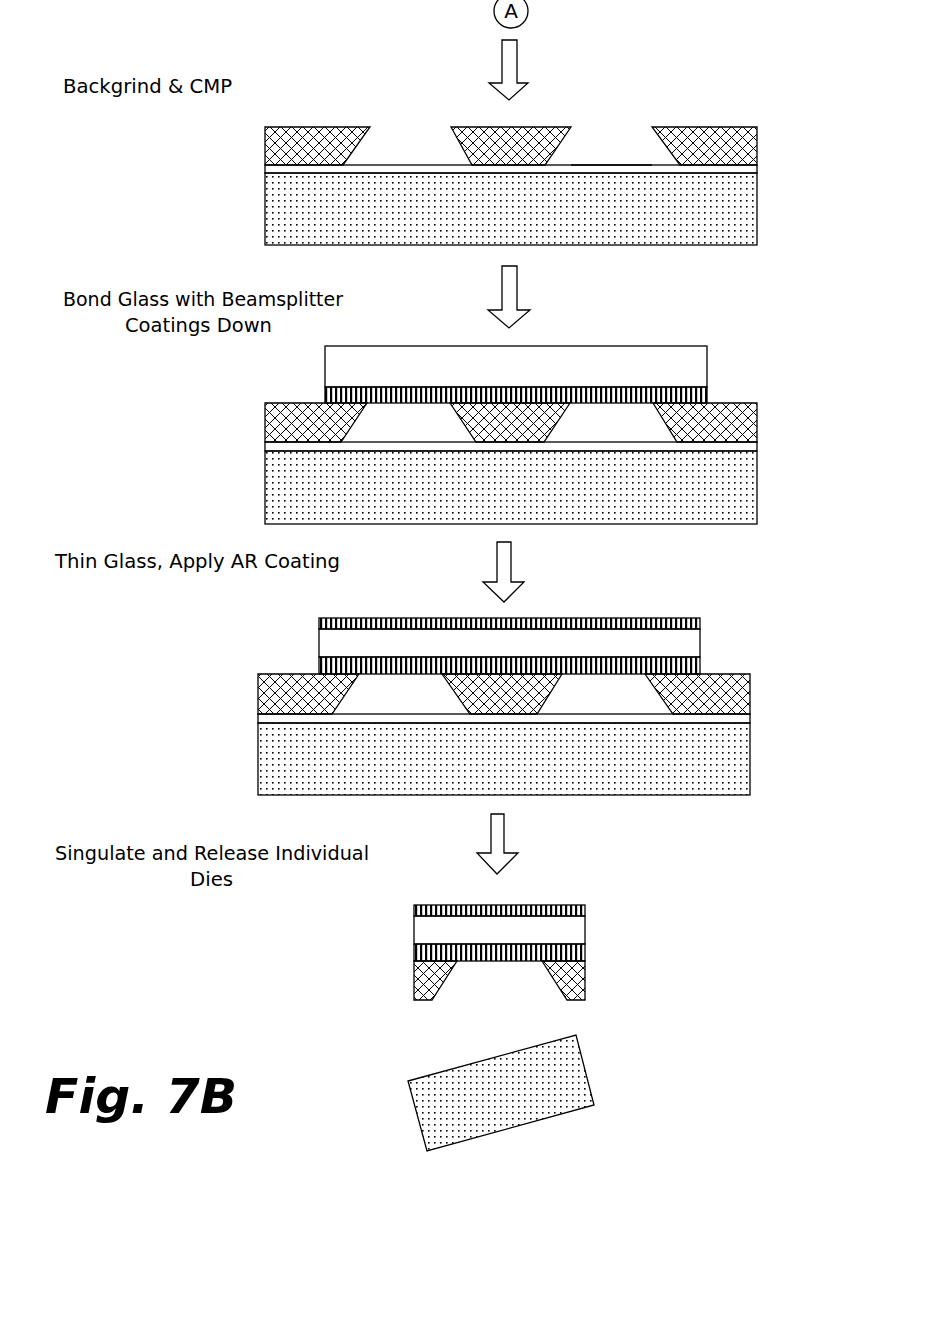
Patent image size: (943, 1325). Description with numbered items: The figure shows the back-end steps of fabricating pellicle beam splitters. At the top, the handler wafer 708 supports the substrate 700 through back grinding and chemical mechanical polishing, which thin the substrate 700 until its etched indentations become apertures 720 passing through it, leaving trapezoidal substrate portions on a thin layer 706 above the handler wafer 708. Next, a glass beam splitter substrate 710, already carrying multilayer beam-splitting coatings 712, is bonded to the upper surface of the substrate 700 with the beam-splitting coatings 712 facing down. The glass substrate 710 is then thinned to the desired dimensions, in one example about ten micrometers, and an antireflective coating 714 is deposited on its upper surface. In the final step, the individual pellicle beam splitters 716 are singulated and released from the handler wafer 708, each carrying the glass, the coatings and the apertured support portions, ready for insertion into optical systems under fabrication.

The support substrate 700 is at (265, 133).
The thin release/etch-stop layer 706 is at (265, 172).
The handler wafer 708 is at (265, 208).
The glass beam splitter substrate 710 is at (325, 368).
The beam-splitting coatings 712 is at (325, 396).
The antireflective coating 714 is at (319, 623).
The individual pellicle beam splitters 716 is at (370, 943).
The apertures 720 is at (605, 142).